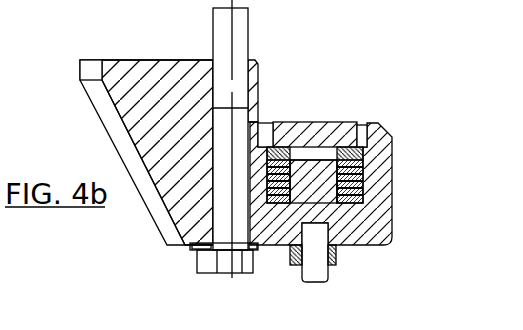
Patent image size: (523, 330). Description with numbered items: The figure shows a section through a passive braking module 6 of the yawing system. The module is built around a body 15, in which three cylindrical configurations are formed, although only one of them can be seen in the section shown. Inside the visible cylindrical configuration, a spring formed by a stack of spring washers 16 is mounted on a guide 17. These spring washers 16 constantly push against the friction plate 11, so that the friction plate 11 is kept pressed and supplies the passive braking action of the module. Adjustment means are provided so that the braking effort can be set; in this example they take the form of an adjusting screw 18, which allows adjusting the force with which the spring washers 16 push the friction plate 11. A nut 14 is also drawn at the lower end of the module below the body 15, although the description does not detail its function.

The passive braking module 6 is at (360, 76).
The friction plate 11 is at (310, 133).
The nut 14 is at (203, 260).
The body 15 is at (160, 97).
The spring washers 16 is at (280, 158).
The guide 17 is at (320, 188).
The adjusting screw 18 is at (317, 258).